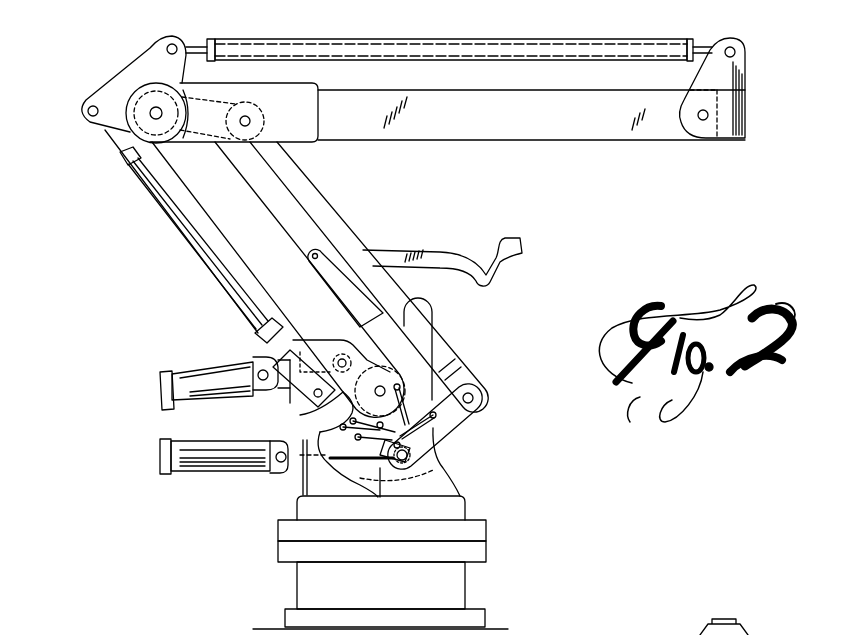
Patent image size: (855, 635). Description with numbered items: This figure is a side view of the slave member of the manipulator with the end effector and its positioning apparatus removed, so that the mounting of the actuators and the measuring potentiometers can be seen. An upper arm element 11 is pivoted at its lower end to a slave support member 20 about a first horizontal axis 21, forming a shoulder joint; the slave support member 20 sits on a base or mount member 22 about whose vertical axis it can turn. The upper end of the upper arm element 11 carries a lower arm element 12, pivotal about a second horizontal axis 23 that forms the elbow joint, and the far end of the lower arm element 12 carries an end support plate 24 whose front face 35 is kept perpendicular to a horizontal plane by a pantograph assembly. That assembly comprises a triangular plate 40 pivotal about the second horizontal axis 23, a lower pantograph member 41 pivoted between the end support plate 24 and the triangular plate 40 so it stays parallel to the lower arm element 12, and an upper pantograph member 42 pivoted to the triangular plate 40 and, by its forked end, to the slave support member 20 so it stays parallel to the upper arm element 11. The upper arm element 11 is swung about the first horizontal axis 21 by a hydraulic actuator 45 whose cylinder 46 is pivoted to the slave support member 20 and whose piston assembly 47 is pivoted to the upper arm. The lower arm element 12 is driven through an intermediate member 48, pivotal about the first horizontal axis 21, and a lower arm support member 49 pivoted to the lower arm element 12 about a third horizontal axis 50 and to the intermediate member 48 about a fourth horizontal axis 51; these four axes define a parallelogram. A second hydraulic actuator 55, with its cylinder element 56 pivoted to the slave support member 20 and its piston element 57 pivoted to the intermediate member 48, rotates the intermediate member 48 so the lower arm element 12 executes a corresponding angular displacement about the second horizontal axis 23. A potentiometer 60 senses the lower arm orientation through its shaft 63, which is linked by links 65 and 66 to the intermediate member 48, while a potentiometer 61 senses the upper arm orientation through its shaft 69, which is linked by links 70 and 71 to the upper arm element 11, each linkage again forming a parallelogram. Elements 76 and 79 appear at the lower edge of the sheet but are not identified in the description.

The upper arm element 11 is at (218, 228).
The lower arm element 12 is at (548, 141).
The slave support member 20 is at (465, 505).
The first horizontal axis 21 is at (420, 322).
The base or mount member 22 is at (465, 584).
The second horizontal axis 23 is at (86, 112).
The end support plate 24 is at (722, 140).
The front face 35 is at (745, 108).
The triangular plate 40 is at (128, 74).
The lower pantograph member 41 is at (476, 40).
The upper pantograph member 42 is at (147, 190).
The hydraulic actuator 45 is at (160, 384).
The cylinder 46 is at (220, 394).
The piston assembly 47 is at (345, 358).
The intermediate member 48 is at (478, 404).
The lower arm support member 49 is at (340, 224).
The third horizontal axis 50 is at (249, 117).
The fourth horizontal axis 51 is at (470, 394).
The hydraulic actuator 55 is at (160, 458).
The cylinder element 56 is at (238, 462).
The piston element 57 is at (365, 470).
The potentiometer 60 is at (350, 422).
The potentiometer 61 is at (380, 475).
The shaft 63 is at (339, 426).
The link 65 is at (338, 462).
The link 66 is at (455, 410).
The shaft 69 is at (440, 452).
The link 70 is at (440, 432).
The link 71 is at (428, 378).
The component 76 is at (134, 627).
The component 79 is at (62, 634).